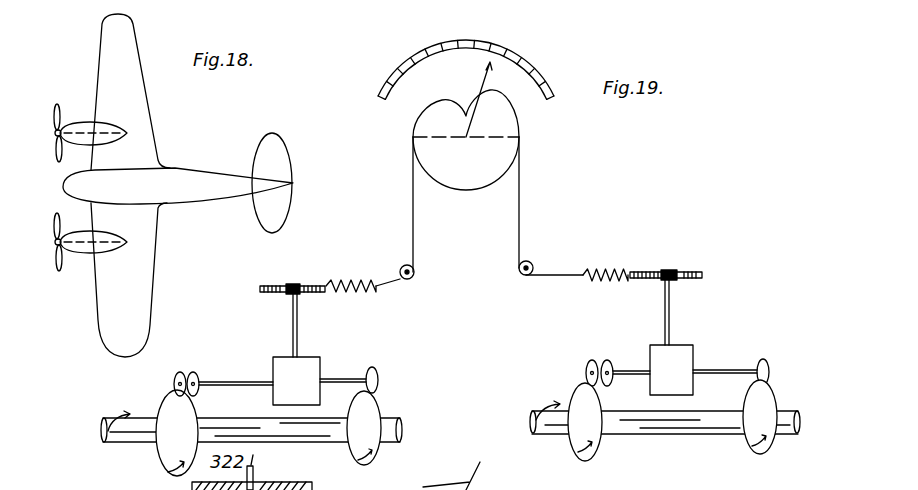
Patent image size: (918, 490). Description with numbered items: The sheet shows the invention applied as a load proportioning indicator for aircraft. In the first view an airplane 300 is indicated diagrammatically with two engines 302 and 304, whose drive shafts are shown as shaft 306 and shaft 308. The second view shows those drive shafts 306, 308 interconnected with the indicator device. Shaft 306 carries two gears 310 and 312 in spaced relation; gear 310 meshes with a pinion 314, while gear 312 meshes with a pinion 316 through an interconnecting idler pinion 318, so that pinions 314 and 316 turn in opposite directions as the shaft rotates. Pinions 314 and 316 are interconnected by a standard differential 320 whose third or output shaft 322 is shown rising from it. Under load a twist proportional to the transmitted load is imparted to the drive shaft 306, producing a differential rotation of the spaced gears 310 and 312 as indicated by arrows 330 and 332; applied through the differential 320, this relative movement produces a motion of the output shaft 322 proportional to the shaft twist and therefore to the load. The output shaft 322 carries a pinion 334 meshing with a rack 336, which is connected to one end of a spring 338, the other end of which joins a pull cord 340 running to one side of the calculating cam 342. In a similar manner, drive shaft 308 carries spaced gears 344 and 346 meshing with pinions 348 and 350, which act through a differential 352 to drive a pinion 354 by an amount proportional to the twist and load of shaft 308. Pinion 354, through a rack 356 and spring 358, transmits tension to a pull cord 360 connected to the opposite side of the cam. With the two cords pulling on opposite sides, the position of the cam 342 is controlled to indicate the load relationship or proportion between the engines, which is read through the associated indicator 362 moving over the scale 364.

In FIG. 18, the airplane 300 is at (147, 215).
In FIG. 18, the engine 302 is at (78, 121).
In FIG. 18, the engine 304 is at (82, 254).
In FIG. 18, the drive shaft 306 is at (128, 131).
In FIG. 19, the drive shaft 306 is at (288, 438).
In FIG. 18, the drive shaft 308 is at (127, 244).
In FIG. 19, the drive shaft 308 is at (657, 418).
In FIG. 19, the gear 310 is at (363, 403).
In FIG. 19, the gear 312 is at (163, 407).
In FIG. 19, the pinion 314 is at (375, 368).
In FIG. 19, the pinion 316 is at (196, 371).
In FIG. 19, the idler pinion 318 is at (180, 371).
In FIG. 19, the differential 320 is at (307, 363).
In FIG. 19, the output shaft 322 is at (298, 325).
In FIG. 19, the arrow 330 is at (367, 458).
In FIG. 19, the arrow 332 is at (166, 472).
In FIG. 19, the pinion 334 is at (295, 284).
In FIG. 19, the rack 336 is at (262, 286).
In FIG. 19, the spring 338 is at (358, 290).
In FIG. 19, the pull cord 340 is at (415, 243).
In FIG. 19, the calculating cam 342 is at (490, 168).
In FIG. 19, the gear 344 is at (767, 403).
In FIG. 19, the gear 346 is at (577, 402).
In FIG. 19, the pinion 348 is at (762, 362).
In FIG. 19, the pinion 350 is at (607, 362).
In FIG. 19, the differential 352 is at (675, 357).
In FIG. 19, the pinion 354 is at (669, 271).
In FIG. 19, the rack 356 is at (690, 278).
In FIG. 19, the spring 358 is at (606, 268).
In FIG. 19, the pull cord 360 is at (520, 248).
In FIG. 19, the indicator 362 is at (480, 82).
In FIG. 19, the scale 364 is at (457, 38).